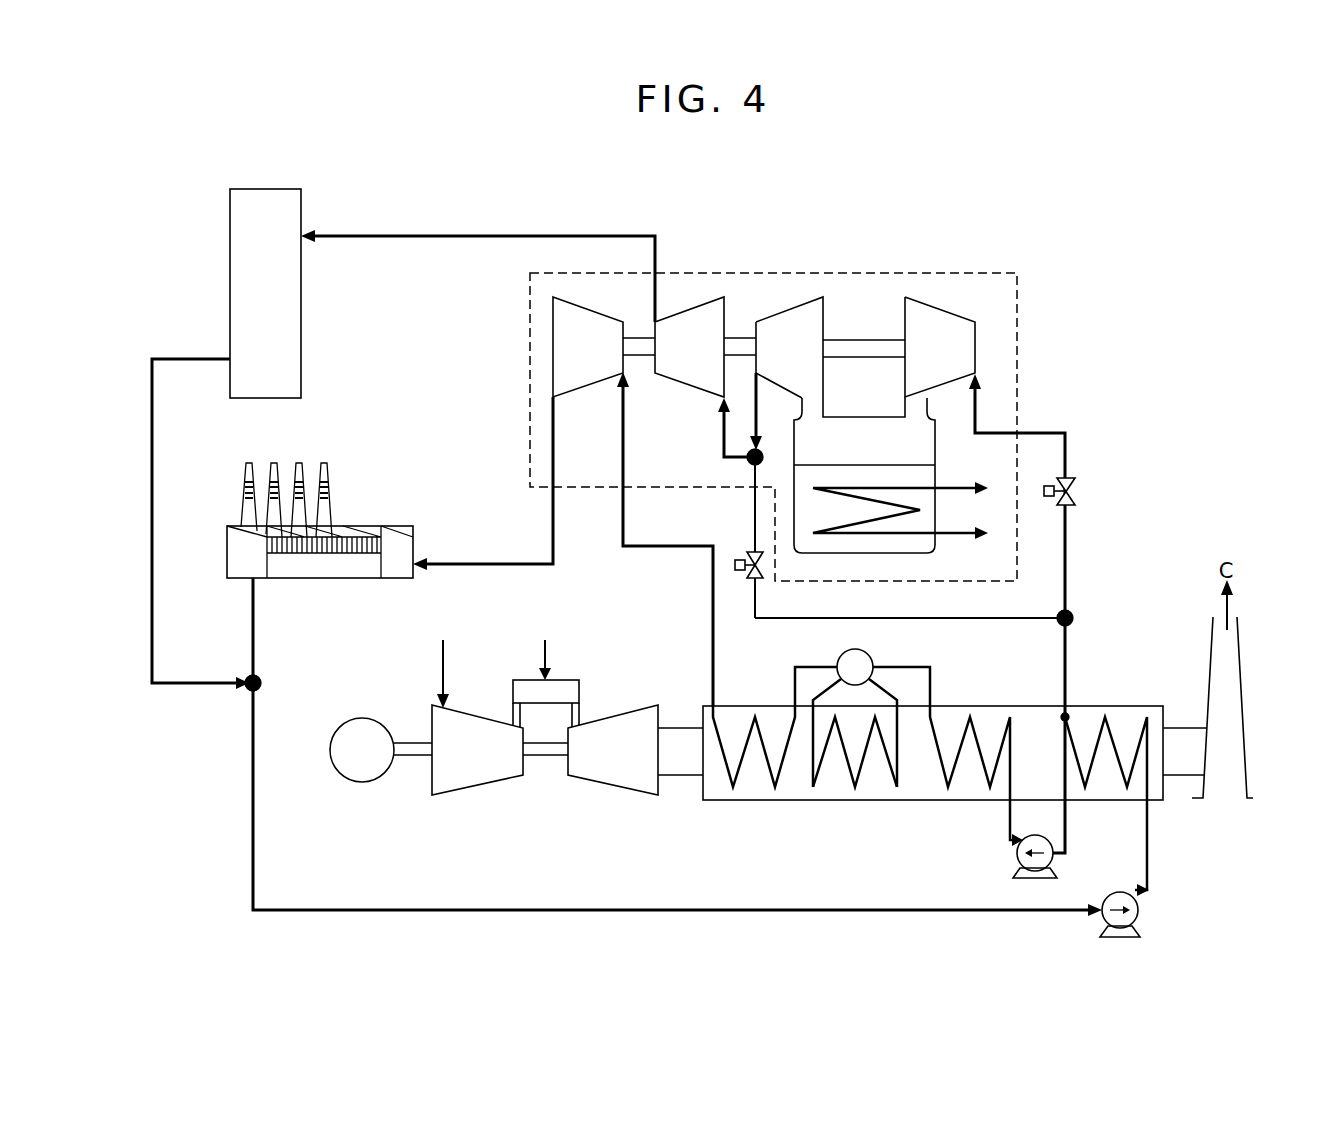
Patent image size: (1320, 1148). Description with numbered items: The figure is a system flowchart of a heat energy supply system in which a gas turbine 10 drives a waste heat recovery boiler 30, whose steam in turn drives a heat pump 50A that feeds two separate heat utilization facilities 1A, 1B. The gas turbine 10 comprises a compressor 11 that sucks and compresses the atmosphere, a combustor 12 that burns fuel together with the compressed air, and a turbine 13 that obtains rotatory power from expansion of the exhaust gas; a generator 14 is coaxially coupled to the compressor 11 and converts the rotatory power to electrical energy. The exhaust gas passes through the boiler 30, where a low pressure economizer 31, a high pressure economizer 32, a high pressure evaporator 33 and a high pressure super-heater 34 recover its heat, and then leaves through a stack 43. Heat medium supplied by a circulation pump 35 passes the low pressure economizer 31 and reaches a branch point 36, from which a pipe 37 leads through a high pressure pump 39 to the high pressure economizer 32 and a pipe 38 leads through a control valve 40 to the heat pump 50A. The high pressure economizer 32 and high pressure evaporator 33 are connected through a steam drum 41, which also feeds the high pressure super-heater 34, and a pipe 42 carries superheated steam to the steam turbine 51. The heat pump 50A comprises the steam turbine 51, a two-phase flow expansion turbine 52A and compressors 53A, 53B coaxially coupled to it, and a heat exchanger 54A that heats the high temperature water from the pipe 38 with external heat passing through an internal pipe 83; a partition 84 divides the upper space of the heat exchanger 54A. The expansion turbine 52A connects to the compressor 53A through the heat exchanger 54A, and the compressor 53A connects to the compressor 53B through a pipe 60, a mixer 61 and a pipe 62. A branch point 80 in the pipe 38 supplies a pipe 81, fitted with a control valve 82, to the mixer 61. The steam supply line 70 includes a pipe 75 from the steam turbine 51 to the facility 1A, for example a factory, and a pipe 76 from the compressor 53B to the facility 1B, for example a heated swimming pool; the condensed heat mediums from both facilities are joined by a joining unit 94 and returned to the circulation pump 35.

The heat utilization facility 1A is at (368, 526).
The heat utilization facility 1B is at (250, 310).
The gas turbine 10 is at (494, 749).
The compressor 11 is at (461, 768).
The combustor 12 is at (568, 680).
The turbine 13 is at (600, 768).
The generator 14 is at (366, 719).
The boiler 30 is at (1147, 668).
The low pressure economizer 31 is at (1106, 706).
The high pressure economizer 32 is at (944, 796).
The high pressure evaporator 33 is at (853, 796).
The high pressure super-heater 34 is at (731, 796).
The circulation pump 35 is at (1140, 910).
The branch point 36 is at (1061, 716).
The pipe 37 is at (1068, 822).
The pipe 38 is at (1068, 551).
The high pressure pump 39 is at (1017, 860).
The control valve 40 is at (1076, 484).
The steam drum 41 is at (839, 656).
The pipe 42 is at (713, 644).
The stack 43 is at (1243, 658).
The heat pump 50A is at (977, 272).
The steam turbine 51 is at (571, 364).
The two-phase flow expansion turbine 52A is at (918, 364).
The compressor 53A is at (768, 364).
The compressor 53B is at (668, 364).
The heat exchanger 54A is at (936, 449).
The pipe 60 is at (761, 413).
The mixer 61 is at (745, 461).
The pipe 62 is at (722, 423).
The steam supply line 70 is at (423, 219).
The pipe 75 is at (556, 564).
The pipe 76 is at (555, 234).
The branch point 80 is at (1074, 618).
The pipe 81 is at (1044, 615).
The control valve 82 is at (750, 556).
The pipe 83 is at (966, 538).
The partition 84 is at (866, 452).
The joining unit 94 is at (264, 683).